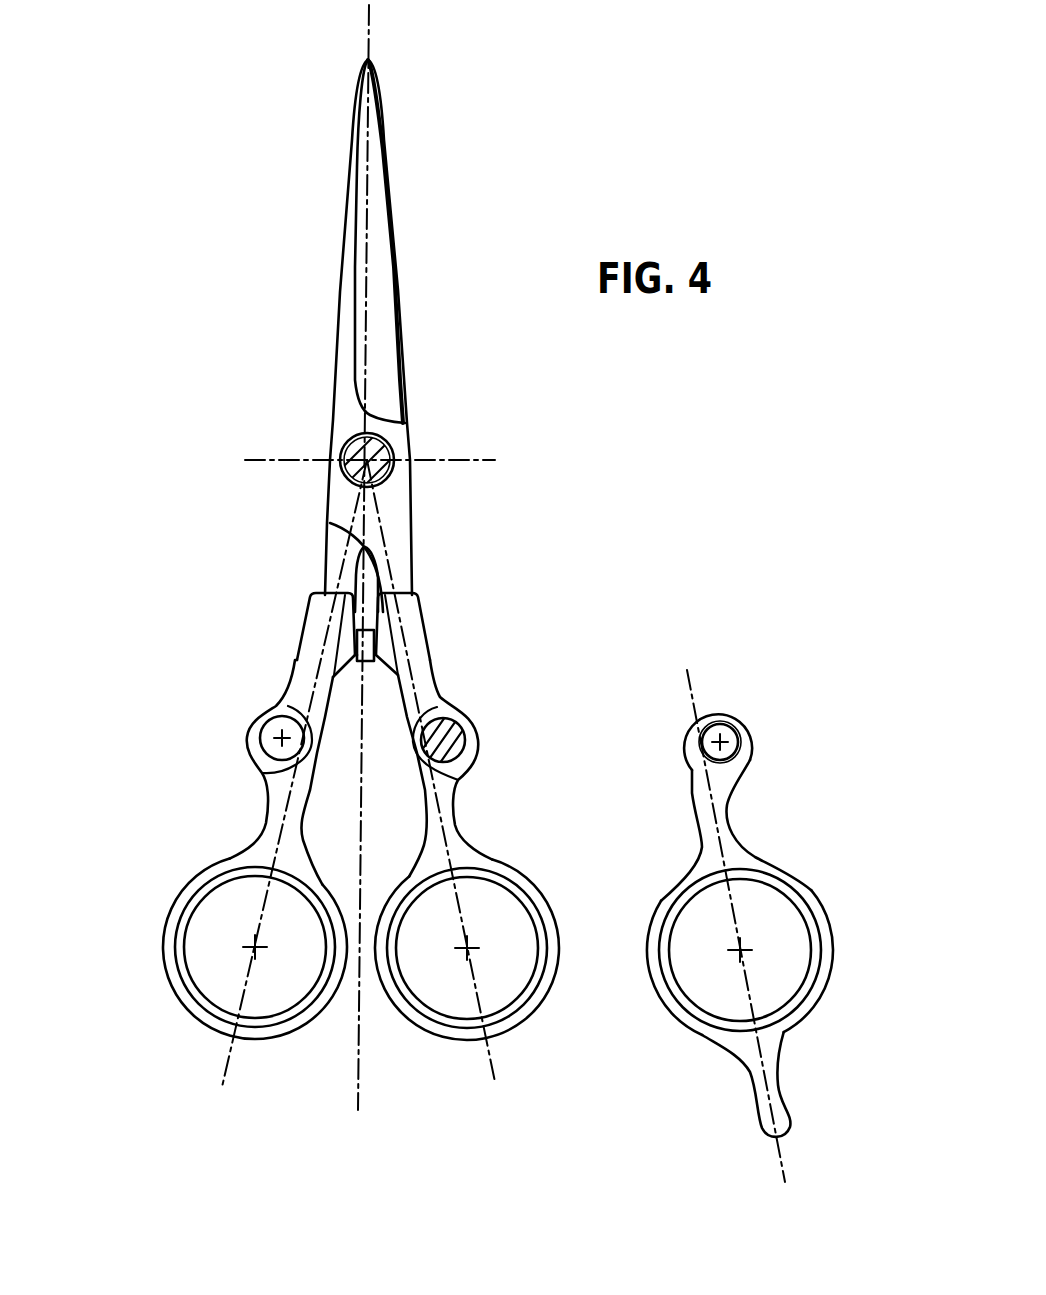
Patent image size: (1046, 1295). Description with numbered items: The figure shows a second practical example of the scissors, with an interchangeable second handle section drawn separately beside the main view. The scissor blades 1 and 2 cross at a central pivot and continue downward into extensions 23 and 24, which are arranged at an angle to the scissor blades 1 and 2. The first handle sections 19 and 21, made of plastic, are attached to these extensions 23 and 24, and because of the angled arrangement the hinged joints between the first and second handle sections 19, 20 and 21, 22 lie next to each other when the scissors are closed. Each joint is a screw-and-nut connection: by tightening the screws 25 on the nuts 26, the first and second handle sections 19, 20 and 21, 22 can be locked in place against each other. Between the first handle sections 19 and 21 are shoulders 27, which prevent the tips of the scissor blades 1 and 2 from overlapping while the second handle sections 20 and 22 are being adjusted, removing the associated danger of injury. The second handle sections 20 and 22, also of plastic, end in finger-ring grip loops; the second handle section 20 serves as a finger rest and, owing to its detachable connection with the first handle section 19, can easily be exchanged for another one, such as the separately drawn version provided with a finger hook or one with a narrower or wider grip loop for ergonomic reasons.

The scissor blade 1 is at (399, 210).
The scissor blade 2 is at (338, 291).
The first handle section 19 is at (432, 660).
The second handle section 20 is at (462, 830).
The first handle section 21 is at (305, 627).
The second handle section 22 is at (240, 850).
The extension 23 is at (410, 572).
The extension 24 is at (323, 563).
The screw 25 is at (421, 739).
The nut 26 is at (278, 738).
The shoulder 27 is at (357, 646).